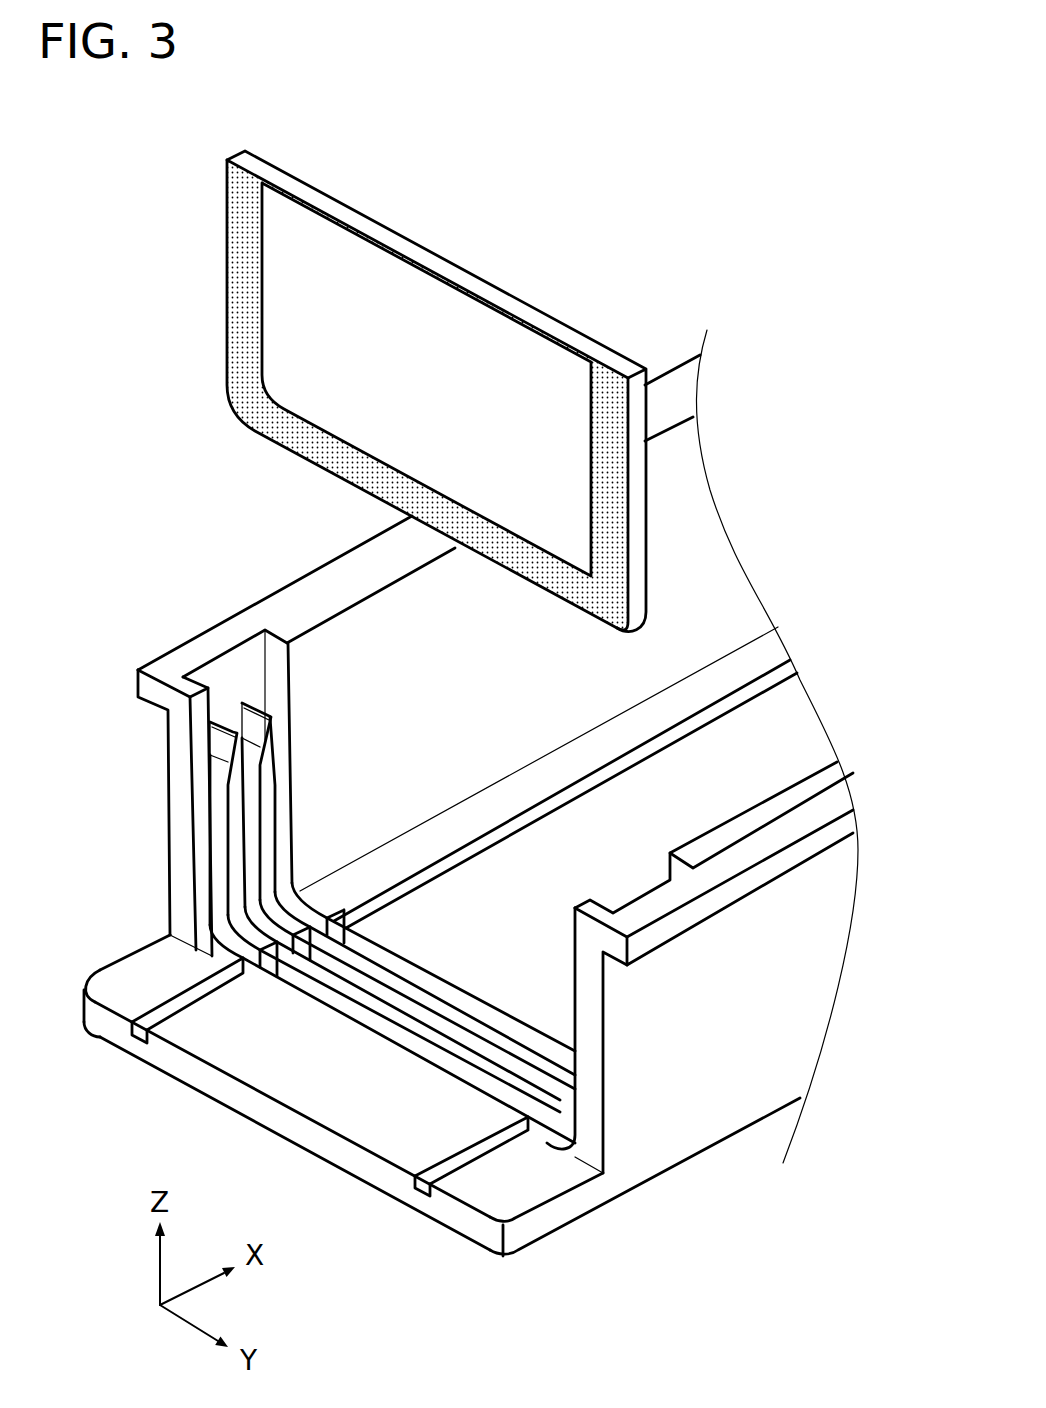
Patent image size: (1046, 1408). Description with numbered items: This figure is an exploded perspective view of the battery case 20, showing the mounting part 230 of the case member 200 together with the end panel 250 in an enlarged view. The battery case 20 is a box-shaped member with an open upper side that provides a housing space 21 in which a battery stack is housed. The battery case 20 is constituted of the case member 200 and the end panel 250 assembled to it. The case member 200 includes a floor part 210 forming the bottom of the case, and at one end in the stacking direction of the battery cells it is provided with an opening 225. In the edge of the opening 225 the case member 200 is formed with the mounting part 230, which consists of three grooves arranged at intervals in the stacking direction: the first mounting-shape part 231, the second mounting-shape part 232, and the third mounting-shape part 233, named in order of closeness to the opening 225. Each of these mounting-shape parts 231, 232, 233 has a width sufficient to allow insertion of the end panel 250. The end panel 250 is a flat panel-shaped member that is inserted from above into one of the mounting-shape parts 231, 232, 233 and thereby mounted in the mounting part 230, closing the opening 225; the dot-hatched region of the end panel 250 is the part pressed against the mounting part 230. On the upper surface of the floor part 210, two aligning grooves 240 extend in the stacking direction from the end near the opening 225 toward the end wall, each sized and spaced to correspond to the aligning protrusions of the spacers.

The battery case 20 is at (124, 356).
The housing space 21 is at (688, 545).
The case member 200 is at (298, 602).
The floor part 210 is at (783, 733).
The opening 225 is at (202, 896).
The mounting part 230 is at (215, 682).
The first mounting-shape part 231 is at (218, 830).
The second mounting-shape part 232 is at (250, 790).
The third mounting-shape part 233 is at (282, 765).
The aligning groove 240 is at (130, 1037).
The end panel 250 is at (544, 357).